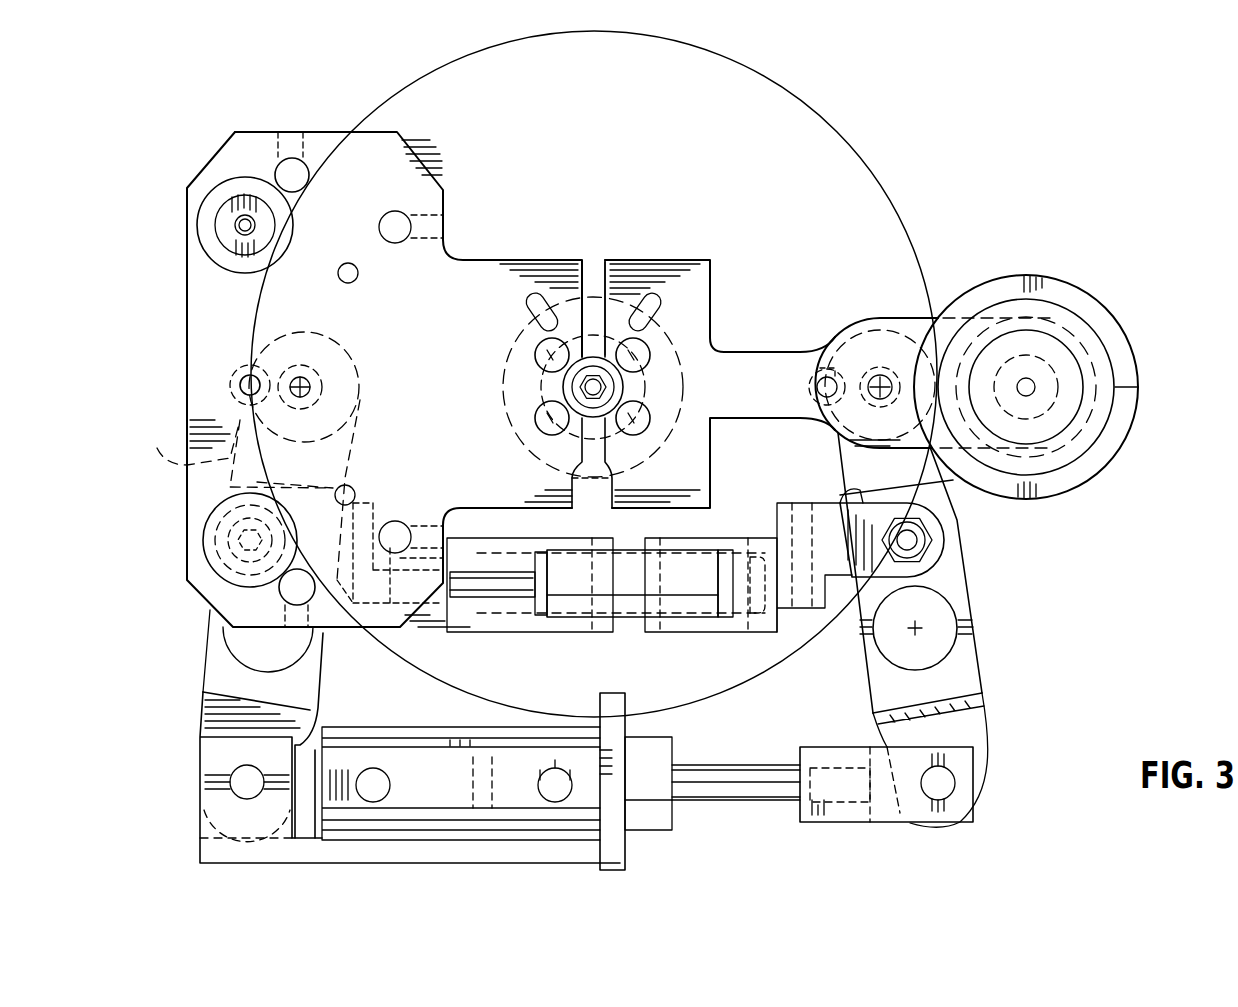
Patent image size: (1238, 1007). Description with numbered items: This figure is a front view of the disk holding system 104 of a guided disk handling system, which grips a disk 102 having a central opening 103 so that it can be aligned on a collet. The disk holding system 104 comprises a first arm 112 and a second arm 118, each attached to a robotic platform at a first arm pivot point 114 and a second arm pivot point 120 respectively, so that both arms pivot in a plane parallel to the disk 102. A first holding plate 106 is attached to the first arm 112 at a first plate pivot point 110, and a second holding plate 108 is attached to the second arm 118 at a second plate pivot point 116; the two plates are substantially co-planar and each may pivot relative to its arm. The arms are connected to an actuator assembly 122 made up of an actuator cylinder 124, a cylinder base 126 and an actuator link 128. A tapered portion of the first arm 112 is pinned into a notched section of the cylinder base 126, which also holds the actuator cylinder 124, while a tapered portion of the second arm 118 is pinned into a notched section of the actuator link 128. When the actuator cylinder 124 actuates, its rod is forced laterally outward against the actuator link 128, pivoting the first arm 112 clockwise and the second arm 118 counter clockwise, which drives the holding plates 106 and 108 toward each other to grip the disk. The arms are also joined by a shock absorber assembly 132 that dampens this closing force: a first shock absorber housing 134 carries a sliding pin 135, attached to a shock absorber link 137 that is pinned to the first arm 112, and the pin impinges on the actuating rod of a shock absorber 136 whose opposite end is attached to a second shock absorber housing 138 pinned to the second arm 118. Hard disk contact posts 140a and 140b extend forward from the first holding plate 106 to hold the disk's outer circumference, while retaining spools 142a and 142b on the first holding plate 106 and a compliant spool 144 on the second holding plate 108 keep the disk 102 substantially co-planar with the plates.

The disk 102 is at (810, 147).
The opening 103 is at (600, 295).
The disk holding system 104 is at (1066, 543).
The first holding plate 106 is at (388, 148).
The second holding plate 108 is at (697, 290).
The first plate pivot point 110 is at (310, 380).
The first arm 112 is at (248, 490).
The first arm pivot point 114 is at (230, 640).
The second plate pivot point 116 is at (878, 385).
The second arm 118 is at (962, 680).
The second arm pivot point 120 is at (918, 628).
The actuator assembly 122 is at (410, 845).
The actuator cylinder 124 is at (587, 817).
The cylinder base 126 is at (202, 820).
The actuator link 128 is at (886, 805).
The shock absorber assembly 132 is at (612, 594).
The first shock absorber housing 134 is at (552, 625).
The sliding pin 135 is at (460, 585).
The shock absorber 136 is at (628, 603).
The shock absorber link 137 is at (350, 485).
The second shock absorber housing 138 is at (860, 495).
The disk contact post 140a is at (287, 178).
The disk contact post 140b is at (300, 605).
The retaining spool 142a is at (238, 208).
The retaining spool 142b is at (212, 537).
The compliant spool 144 is at (1085, 300).